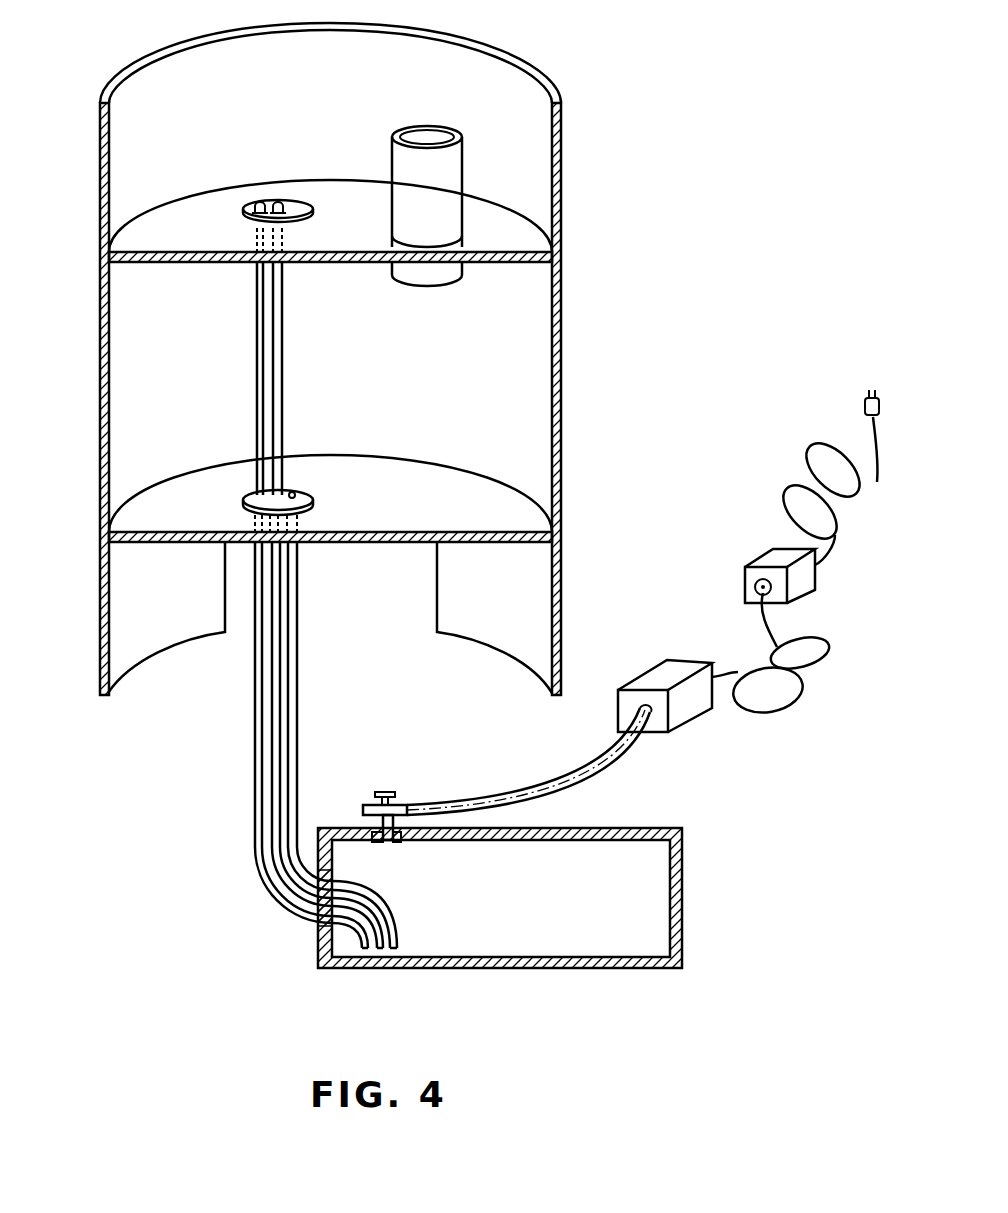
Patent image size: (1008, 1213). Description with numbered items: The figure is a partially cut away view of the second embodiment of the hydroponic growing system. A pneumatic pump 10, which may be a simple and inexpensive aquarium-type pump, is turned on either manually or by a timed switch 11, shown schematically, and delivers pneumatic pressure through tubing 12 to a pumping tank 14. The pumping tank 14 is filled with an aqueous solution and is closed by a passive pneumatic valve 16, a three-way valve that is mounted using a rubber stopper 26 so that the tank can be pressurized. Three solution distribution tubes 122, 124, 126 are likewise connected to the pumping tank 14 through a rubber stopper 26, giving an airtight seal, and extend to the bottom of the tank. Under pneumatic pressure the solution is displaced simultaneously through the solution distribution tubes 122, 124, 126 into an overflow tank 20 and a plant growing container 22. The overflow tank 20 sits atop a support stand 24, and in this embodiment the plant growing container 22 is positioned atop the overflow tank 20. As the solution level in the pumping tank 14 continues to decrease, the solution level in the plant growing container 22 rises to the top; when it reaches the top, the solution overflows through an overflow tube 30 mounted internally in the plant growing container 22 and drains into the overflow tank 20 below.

The pneumatic pump 10 is at (687, 715).
The timed switch 11 is at (767, 557).
The tubing 12 is at (607, 771).
The pumping tank 14 is at (487, 968).
The passive pneumatic valve 16 is at (372, 805).
The overflow tank 20 is at (537, 368).
The plant growing container 22 is at (537, 157).
The support stand 24 is at (115, 612).
The rubber stopper 26 is at (395, 843).
The overflow tube 30 is at (400, 162).
The solution distribution tube 122 is at (263, 664).
The solution distribution tube 124 is at (280, 638).
The solution distribution tube 126 is at (297, 620).